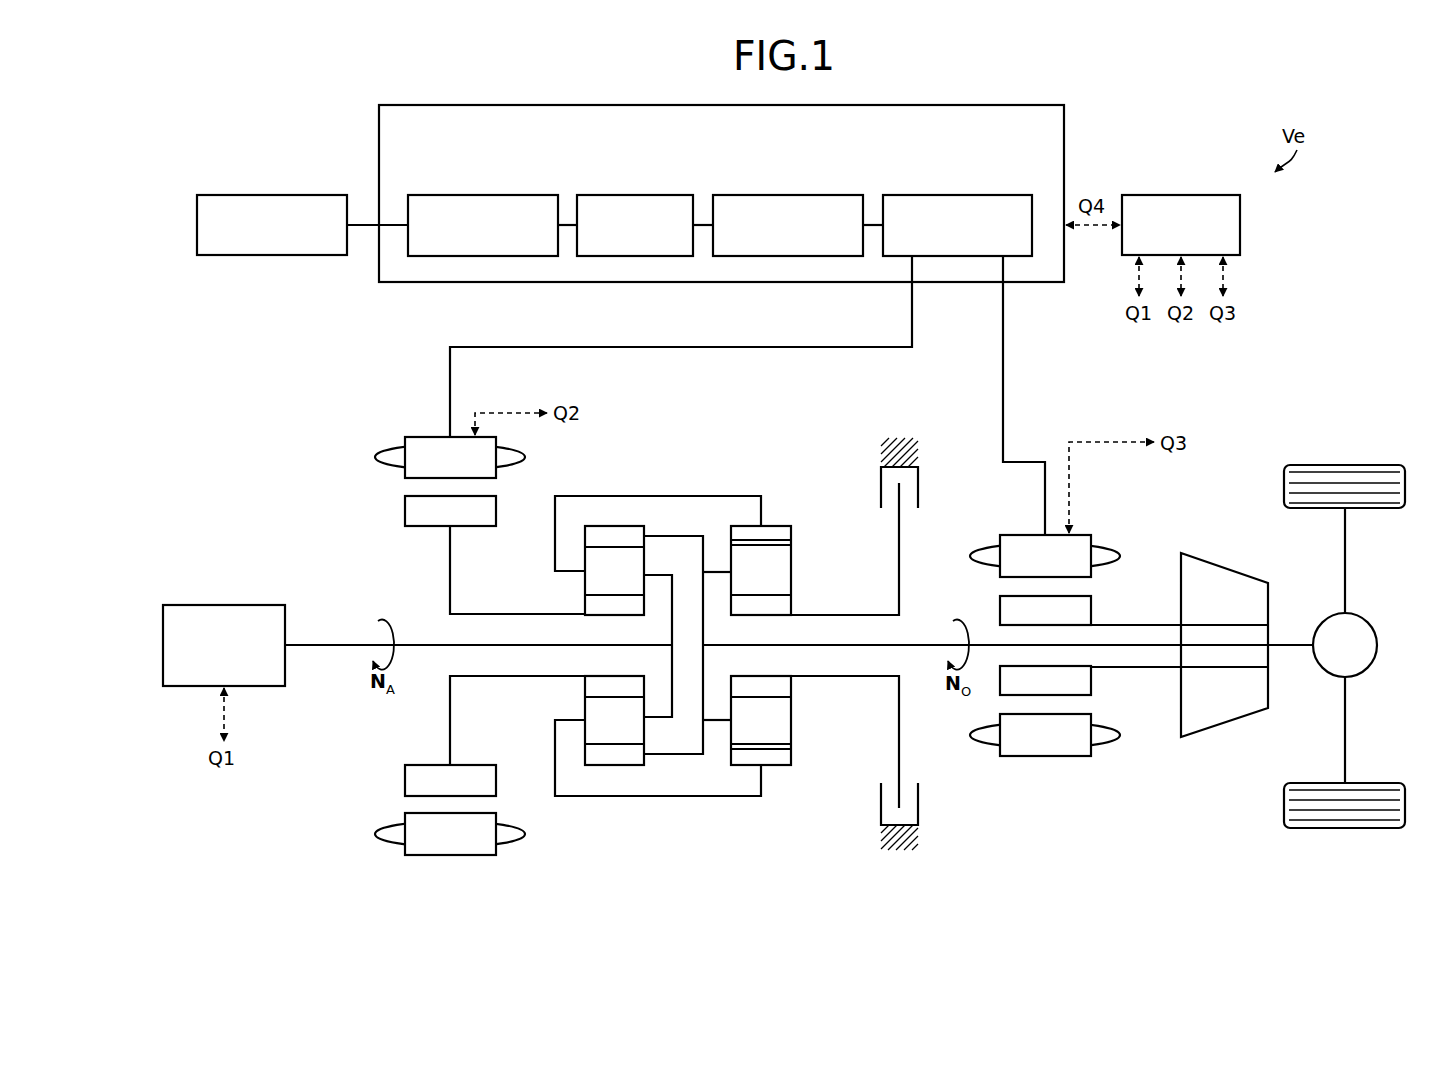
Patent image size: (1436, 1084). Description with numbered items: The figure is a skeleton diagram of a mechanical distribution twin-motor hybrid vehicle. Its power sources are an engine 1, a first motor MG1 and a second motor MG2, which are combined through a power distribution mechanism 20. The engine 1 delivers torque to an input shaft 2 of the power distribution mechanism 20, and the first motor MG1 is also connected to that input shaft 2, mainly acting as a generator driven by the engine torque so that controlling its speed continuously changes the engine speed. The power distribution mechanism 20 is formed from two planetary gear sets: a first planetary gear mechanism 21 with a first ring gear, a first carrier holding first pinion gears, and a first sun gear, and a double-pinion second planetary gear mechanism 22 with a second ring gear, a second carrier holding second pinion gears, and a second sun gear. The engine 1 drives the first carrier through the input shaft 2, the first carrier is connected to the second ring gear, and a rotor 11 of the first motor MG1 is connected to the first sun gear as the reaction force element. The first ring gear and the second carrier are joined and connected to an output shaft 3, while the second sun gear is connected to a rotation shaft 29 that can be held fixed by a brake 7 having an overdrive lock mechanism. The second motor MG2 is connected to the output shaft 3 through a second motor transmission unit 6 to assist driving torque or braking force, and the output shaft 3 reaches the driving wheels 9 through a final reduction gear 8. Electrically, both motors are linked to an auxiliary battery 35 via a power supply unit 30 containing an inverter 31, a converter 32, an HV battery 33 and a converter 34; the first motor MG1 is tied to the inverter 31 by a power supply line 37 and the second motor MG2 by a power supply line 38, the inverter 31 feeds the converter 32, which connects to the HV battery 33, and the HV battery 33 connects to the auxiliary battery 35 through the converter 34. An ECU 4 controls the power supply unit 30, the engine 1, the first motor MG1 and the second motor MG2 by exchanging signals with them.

The engine 1 is at (233, 605).
The input shaft 2 is at (628, 628).
The output shaft 3 is at (1290, 650).
The ECU 4 is at (1190, 195).
The second motor transmission unit 6 is at (1232, 572).
The brake 7 is at (933, 477).
The final reduction gear 8 is at (1328, 617).
The driving wheels 9 is at (1284, 481).
The rotor 11 is at (405, 512).
The power distribution mechanism 20 is at (698, 440).
The first planetary gear mechanism 21 is at (643, 488).
The second planetary gear mechanism 22 is at (755, 486).
The rotation shaft 29 is at (872, 615).
The power supply unit 30 is at (1012, 105).
The inverter 31 is at (980, 195).
The converter 32 is at (808, 195).
The HV battery 33 is at (640, 195).
The converter 34 is at (505, 195).
The auxiliary battery 35 is at (295, 195).
The power supply line 37 is at (855, 349).
The power supply line 38 is at (1005, 332).
The first motor MG1 is at (424, 437).
The second motor MG2 is at (1083, 535).